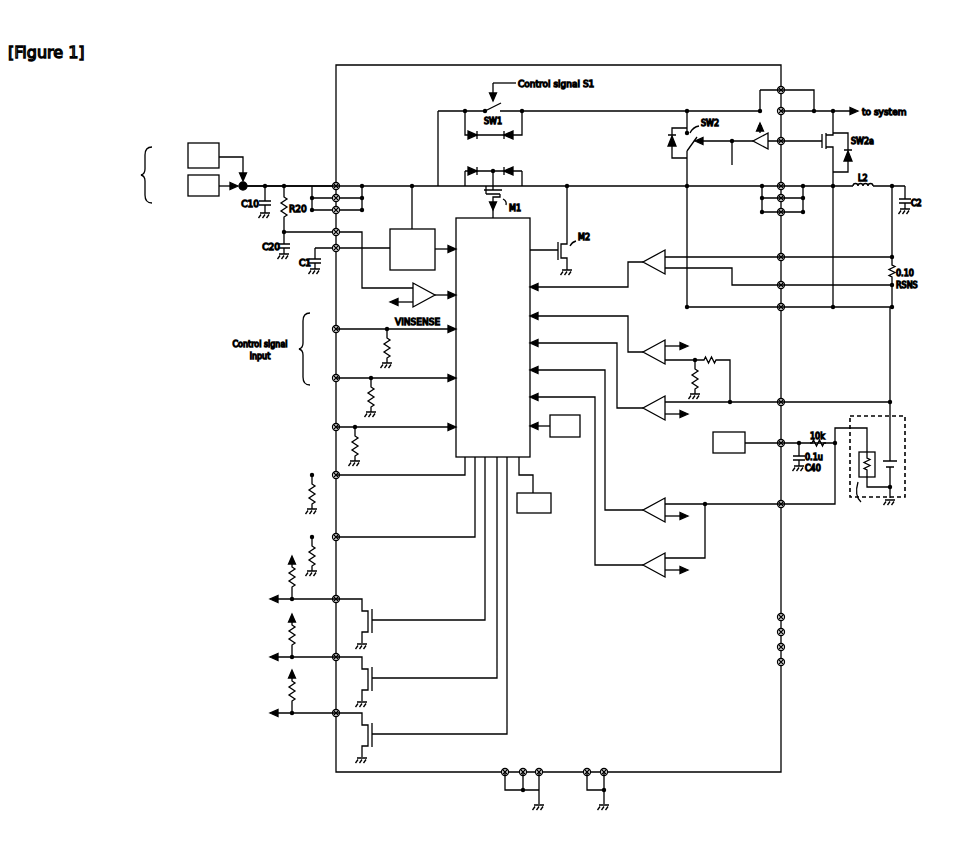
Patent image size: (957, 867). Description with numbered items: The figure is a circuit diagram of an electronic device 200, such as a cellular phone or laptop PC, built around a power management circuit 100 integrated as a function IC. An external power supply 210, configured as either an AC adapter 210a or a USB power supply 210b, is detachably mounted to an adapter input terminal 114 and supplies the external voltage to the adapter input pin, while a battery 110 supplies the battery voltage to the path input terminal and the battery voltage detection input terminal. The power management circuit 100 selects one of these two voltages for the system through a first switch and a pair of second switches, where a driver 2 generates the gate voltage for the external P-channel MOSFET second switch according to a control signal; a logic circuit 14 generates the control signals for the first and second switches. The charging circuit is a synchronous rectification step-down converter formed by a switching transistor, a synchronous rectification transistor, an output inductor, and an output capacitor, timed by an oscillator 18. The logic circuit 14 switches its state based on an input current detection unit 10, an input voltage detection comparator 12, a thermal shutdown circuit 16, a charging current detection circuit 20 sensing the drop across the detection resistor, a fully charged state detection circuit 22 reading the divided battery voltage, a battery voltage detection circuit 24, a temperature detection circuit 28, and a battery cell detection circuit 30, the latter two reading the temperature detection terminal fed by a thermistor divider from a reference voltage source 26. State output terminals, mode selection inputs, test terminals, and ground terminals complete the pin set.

The driver 2 is at (764, 149).
The input current detection unit 10 is at (418, 229).
The input voltage detection comparator 12 is at (422, 287).
The logic circuit 14 is at (530, 227).
The thermal shutdown circuit 16 is at (533, 513).
The oscillator 18 is at (558, 437).
The charging current detection circuit 20 is at (650, 274).
The fully charged state detection circuit 22 is at (650, 364).
The battery voltage detection circuit 24 is at (650, 420).
The reference voltage source 26 is at (731, 432).
The temperature detection circuit 28 is at (650, 522).
The battery cell detection circuit 30 is at (650, 577).
The power management circuit 100 is at (710, 772).
The battery 110 is at (849, 419).
The adapter input terminal 114 is at (248, 184).
The electronic device 200 is at (877, 808).
The external power supply 210 is at (187, 173).
The AC adapter 210a is at (186, 157).
The USB power supply 210b is at (186, 189).